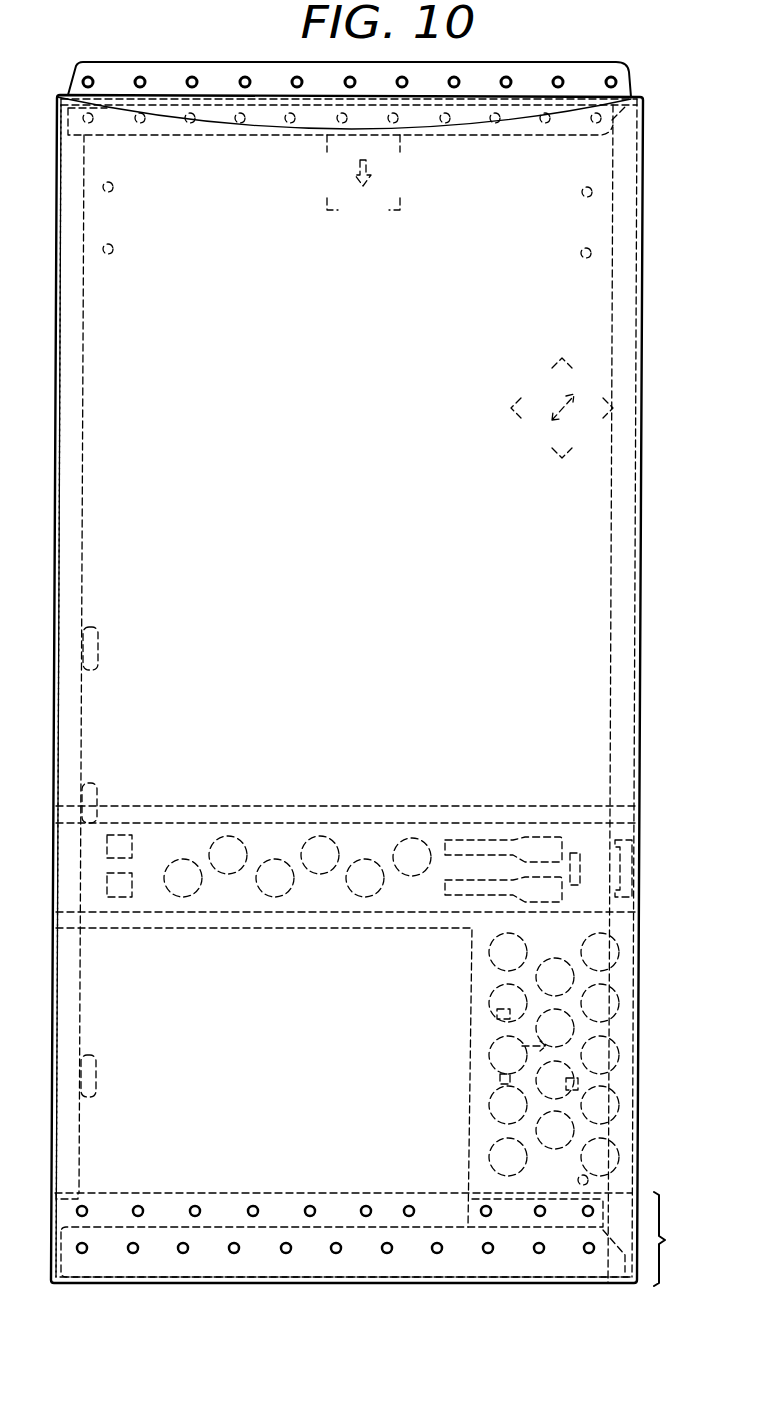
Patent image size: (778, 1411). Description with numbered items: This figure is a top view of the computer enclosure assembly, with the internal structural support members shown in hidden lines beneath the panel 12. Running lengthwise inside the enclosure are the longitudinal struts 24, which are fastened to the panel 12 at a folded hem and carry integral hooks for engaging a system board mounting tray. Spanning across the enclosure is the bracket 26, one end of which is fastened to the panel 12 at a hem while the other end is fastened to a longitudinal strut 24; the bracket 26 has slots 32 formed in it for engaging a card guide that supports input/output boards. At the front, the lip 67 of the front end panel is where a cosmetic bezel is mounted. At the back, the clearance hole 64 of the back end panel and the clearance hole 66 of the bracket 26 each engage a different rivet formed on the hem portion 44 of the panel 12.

The panel 12 is at (644, 296).
The lip 67 is at (171, 62).
The longitudinal struts 24 is at (84, 488).
The bracket 26 is at (248, 806).
The slots 32 is at (466, 838).
The clearance hole 66 is at (482, 1211).
The clearance hole 64 is at (540, 1254).
The hem portion 44 is at (678, 1239).